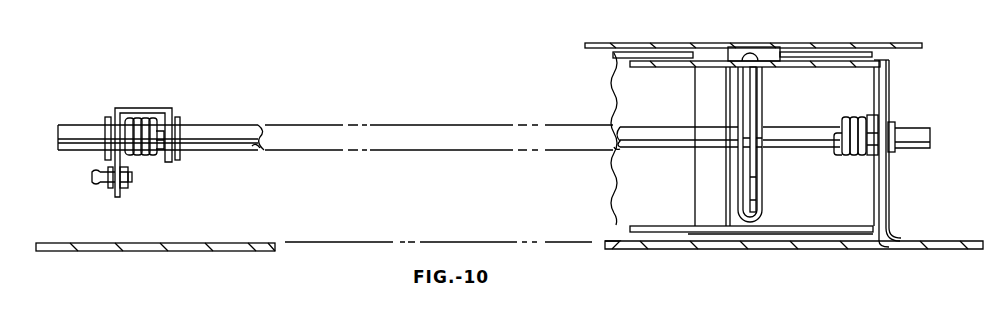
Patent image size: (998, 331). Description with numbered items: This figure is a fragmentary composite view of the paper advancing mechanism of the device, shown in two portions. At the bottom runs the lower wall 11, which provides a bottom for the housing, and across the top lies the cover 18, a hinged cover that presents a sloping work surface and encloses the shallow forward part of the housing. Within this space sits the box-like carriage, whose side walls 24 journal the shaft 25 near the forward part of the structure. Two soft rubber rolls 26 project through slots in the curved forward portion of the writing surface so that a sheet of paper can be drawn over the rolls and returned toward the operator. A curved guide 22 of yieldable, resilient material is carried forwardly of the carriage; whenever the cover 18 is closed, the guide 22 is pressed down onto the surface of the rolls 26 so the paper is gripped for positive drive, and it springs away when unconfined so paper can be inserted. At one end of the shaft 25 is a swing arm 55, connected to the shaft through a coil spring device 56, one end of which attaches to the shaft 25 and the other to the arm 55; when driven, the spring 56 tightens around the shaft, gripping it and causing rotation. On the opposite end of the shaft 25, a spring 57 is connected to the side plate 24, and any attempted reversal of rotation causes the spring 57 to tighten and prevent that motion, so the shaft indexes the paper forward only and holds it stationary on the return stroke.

The lower wall 11 is at (226, 252).
The cover 18 is at (922, 46).
The curved guide 22 is at (618, 84).
The side walls 24 is at (889, 95).
The shaft 25 is at (930, 138).
The soft rubber rolls 26 is at (763, 200).
The swing arm 55 is at (121, 196).
The coil spring device 56 is at (137, 119).
The spring 57 is at (852, 158).